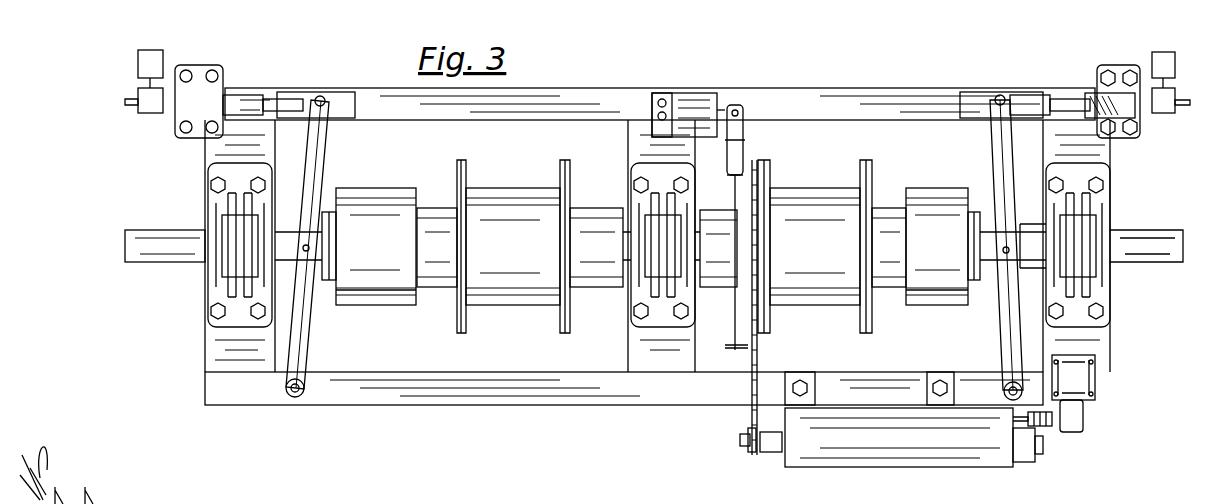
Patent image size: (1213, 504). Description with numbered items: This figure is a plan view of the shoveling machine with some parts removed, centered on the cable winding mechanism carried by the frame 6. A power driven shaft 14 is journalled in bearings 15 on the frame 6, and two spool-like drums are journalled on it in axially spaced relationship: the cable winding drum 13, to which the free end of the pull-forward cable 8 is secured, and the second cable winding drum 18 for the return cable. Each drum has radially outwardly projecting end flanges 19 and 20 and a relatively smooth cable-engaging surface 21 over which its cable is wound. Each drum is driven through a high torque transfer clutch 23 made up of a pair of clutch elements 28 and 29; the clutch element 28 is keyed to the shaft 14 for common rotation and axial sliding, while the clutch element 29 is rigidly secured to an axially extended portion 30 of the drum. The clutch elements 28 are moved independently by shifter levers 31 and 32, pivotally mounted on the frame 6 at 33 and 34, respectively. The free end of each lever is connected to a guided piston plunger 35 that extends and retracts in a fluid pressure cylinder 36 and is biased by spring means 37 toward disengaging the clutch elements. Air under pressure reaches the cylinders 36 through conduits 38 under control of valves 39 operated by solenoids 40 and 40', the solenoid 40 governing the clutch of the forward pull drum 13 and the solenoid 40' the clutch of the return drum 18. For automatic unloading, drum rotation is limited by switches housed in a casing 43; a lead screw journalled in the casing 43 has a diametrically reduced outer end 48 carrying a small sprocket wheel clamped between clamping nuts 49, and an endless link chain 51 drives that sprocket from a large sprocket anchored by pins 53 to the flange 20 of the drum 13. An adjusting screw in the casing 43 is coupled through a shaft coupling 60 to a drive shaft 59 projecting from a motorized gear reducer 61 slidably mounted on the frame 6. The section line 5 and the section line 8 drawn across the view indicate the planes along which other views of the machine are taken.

The section line 5- 5 is at (826, 500).
The frame 6 is at (686, 492).
The pull-forward cable 8 is at (1150, 463).
The cable winding drum 13 is at (804, 245).
The power driven shaft 14 is at (172, 262).
The bearings 15 is at (228, 280).
The second cable winding drum 18 is at (502, 241).
The end flange 19 is at (458, 166).
The end flange 20 is at (564, 162).
The cable-engaging surface 21 is at (492, 205).
The clutch 23 is at (366, 200).
The clutch element 28 is at (328, 282).
The clutch element 29 is at (369, 298).
The axially extended portion 30 is at (430, 215).
The shifter lever 31 is at (1007, 330).
The shifter lever 32 is at (302, 356).
The pivot 33 is at (1005, 384).
The pivot 34 is at (290, 398).
The guided piston plunger 35 is at (277, 100).
The fluid pressure cylinder 36 is at (228, 92).
The spring means 37 is at (1093, 100).
The conduit 38 is at (125, 101).
The valve 39 is at (152, 112).
The solenoid 40 is at (1138, 63).
The solenoid 40' is at (121, 66).
The casing 43 is at (956, 467).
The diametrically reduced outer end 48 is at (742, 440).
The clamping nuts 49 is at (750, 434).
The endless link chain 51 is at (758, 364).
The pins 53 is at (737, 330).
The drive shaft 59 is at (1045, 426).
The shaft coupling 60 is at (1040, 428).
The motorized gear reducer 61 is at (1085, 420).